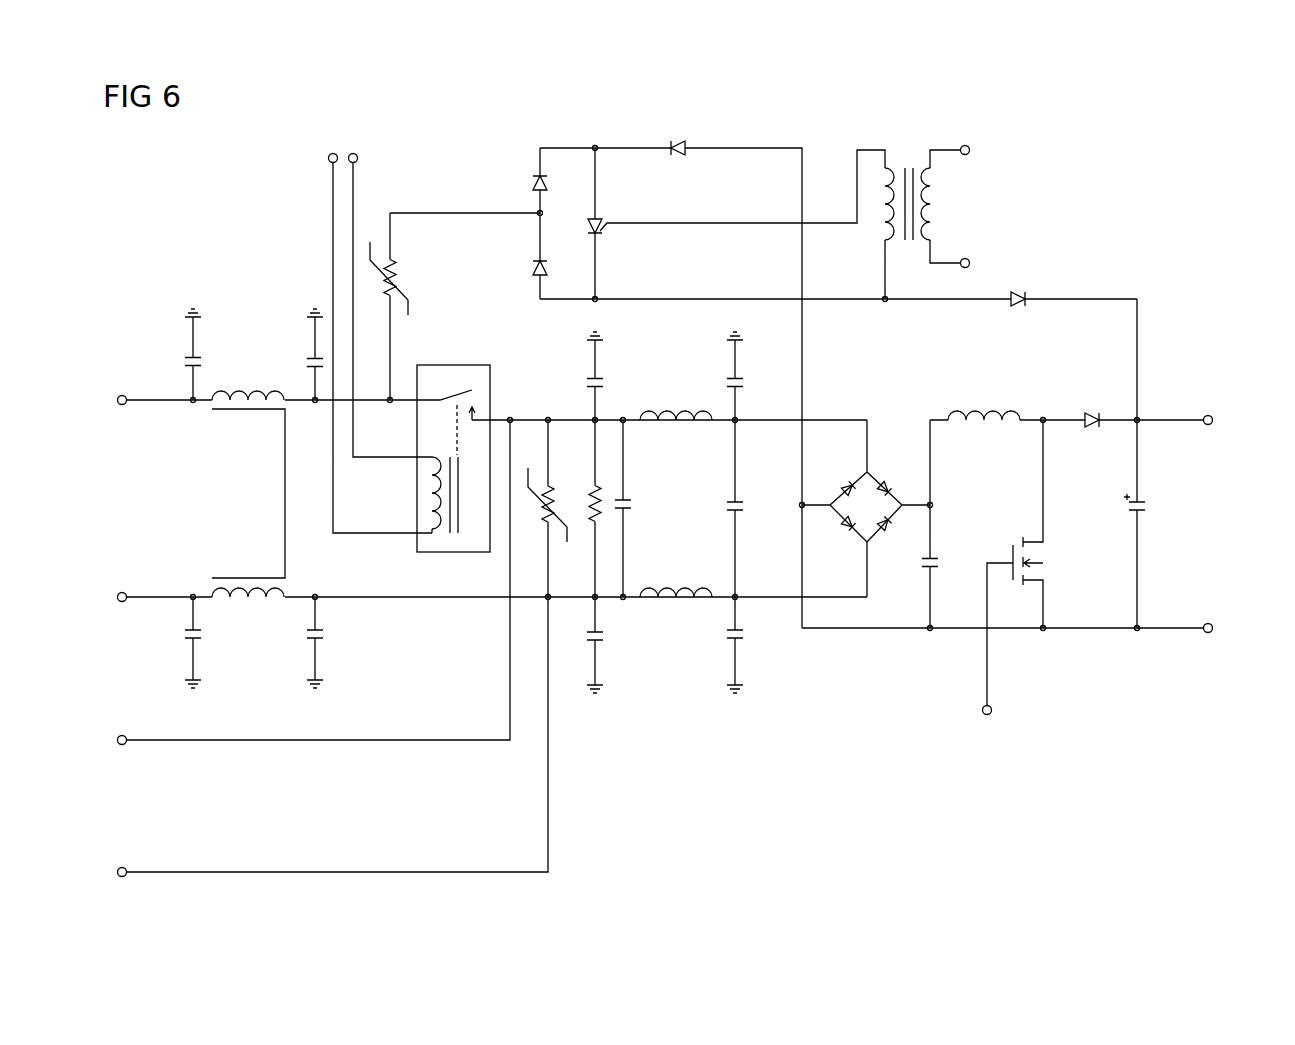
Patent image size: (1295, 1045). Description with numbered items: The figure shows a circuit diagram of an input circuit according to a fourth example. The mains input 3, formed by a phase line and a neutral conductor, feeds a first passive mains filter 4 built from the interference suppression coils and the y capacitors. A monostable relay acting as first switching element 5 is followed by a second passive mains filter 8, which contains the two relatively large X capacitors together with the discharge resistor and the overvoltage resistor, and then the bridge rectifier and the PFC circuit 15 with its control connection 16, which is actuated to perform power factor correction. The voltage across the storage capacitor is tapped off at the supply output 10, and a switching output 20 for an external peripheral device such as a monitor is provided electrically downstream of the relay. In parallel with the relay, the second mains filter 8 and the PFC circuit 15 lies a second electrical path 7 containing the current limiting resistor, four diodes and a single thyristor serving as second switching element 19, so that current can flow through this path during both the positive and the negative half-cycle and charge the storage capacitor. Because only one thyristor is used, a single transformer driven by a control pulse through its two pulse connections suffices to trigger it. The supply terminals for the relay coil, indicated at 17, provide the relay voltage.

The mains input 3 is at (132, 495).
The first passive mains filter 4 is at (402, 618).
The first switching element 5 is at (492, 322).
The second electrical path 7 is at (480, 170).
The second passive mains filter 8 is at (632, 728).
The supply output 10 is at (1207, 517).
The PFC circuit 15 is at (903, 638).
The control connection 16 is at (955, 757).
The relay supply terminals 17 is at (322, 160).
The second switching element 19 is at (592, 127).
The switching output 20 is at (140, 800).